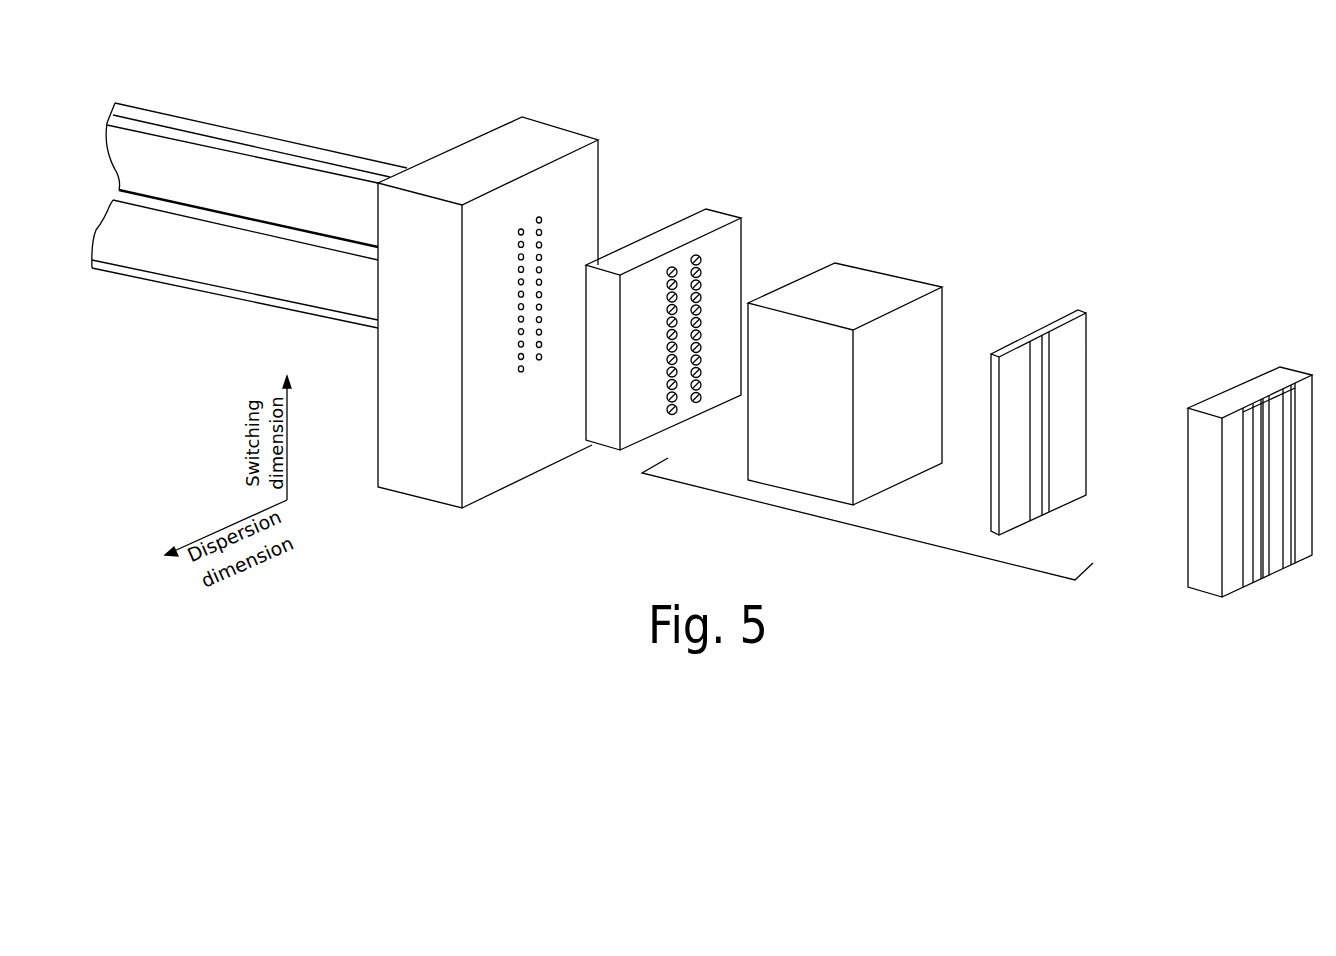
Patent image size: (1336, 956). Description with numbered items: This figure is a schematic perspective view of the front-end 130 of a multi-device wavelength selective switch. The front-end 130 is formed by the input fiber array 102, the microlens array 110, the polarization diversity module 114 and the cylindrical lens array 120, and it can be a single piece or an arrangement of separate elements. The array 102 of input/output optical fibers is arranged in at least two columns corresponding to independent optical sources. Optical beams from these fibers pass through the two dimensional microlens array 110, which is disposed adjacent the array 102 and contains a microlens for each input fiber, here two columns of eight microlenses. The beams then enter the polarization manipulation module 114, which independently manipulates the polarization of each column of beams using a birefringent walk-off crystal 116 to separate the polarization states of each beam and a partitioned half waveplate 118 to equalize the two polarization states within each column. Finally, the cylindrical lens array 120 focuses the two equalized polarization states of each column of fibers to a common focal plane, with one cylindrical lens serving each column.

The input/output optical fiber array 102 is at (520, 133).
The two dimensional microlens array 110 is at (702, 225).
The polarization diversity module 114 is at (890, 537).
The birefringent walk-off crystal 116 is at (864, 295).
The partitioned half waveplate 118 is at (1057, 322).
The cylindrical lens array 120 is at (1253, 383).
The front-end 130 is at (845, 183).